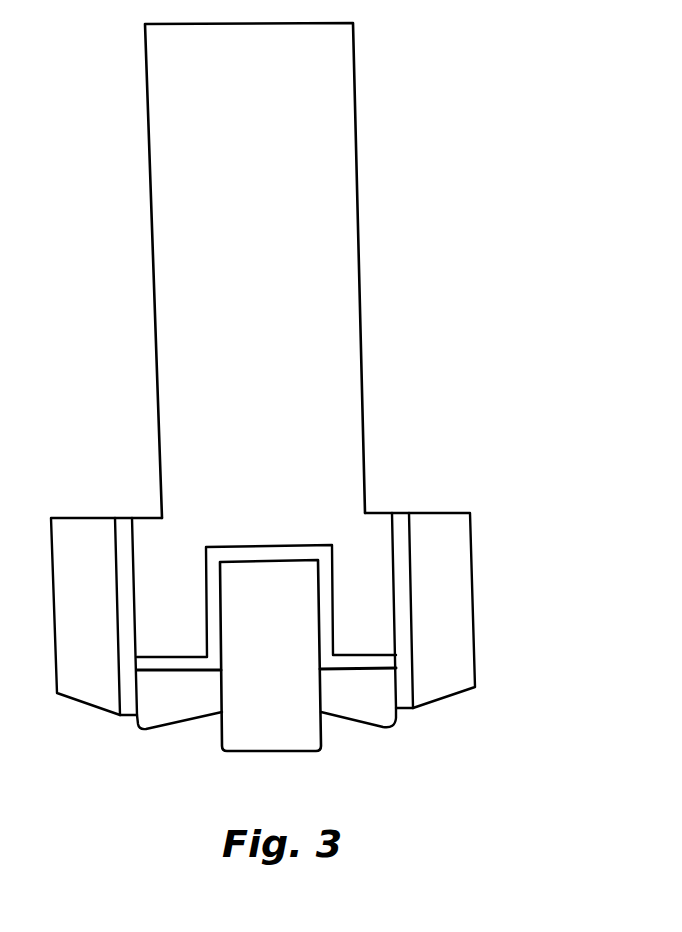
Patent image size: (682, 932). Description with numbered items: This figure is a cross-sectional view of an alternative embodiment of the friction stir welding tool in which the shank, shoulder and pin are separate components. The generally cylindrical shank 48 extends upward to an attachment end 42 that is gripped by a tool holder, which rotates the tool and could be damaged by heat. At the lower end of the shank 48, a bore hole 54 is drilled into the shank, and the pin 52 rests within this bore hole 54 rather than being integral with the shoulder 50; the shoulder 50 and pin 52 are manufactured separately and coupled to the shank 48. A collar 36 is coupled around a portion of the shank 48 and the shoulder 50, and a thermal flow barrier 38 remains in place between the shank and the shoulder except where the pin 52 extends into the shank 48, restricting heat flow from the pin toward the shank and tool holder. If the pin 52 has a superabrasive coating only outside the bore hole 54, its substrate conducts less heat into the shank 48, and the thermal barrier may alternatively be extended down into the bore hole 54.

The collar 36 is at (447, 563).
The thermal flow barrier 38 is at (163, 666).
The attachment end 42 is at (398, 526).
The shank 48 is at (332, 312).
The shoulder 50 is at (360, 707).
The pin 52 is at (275, 738).
The bore hole 54 is at (342, 545).